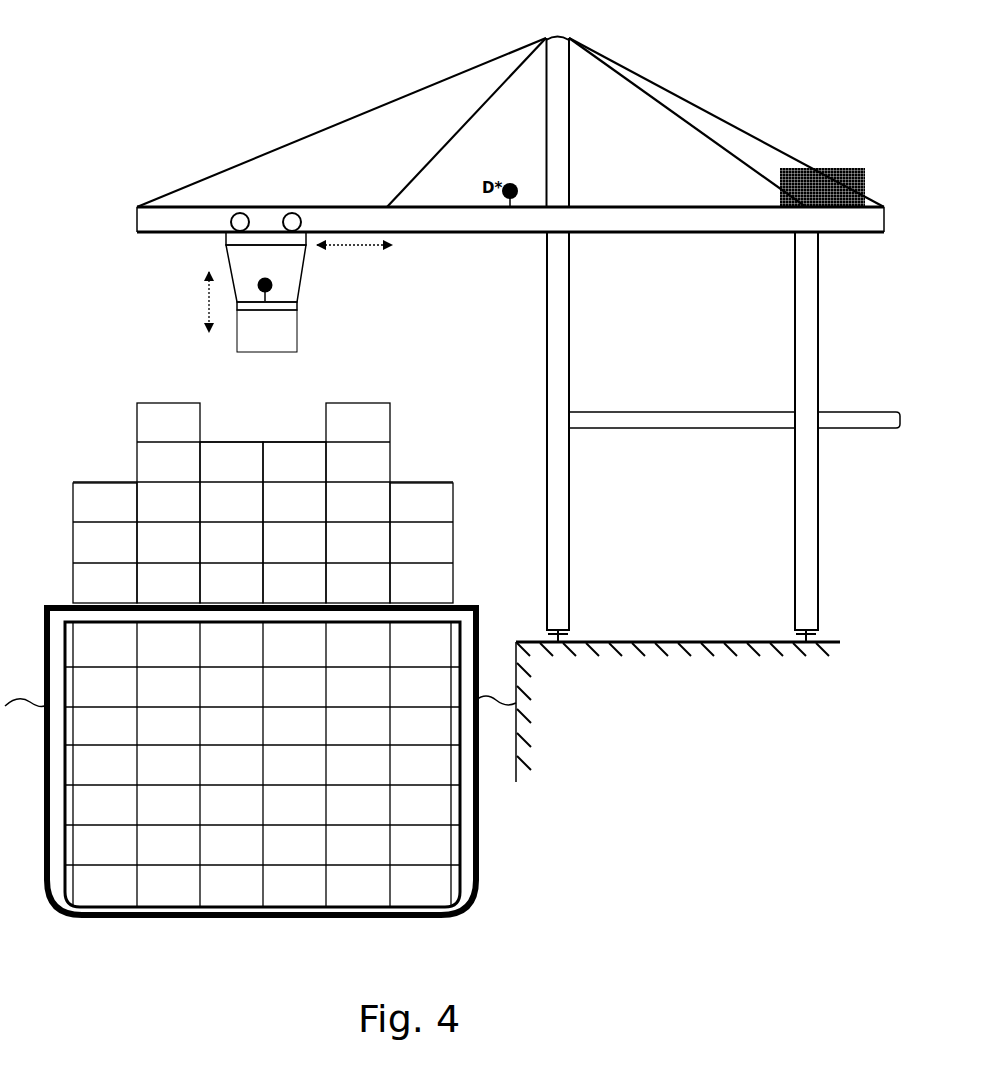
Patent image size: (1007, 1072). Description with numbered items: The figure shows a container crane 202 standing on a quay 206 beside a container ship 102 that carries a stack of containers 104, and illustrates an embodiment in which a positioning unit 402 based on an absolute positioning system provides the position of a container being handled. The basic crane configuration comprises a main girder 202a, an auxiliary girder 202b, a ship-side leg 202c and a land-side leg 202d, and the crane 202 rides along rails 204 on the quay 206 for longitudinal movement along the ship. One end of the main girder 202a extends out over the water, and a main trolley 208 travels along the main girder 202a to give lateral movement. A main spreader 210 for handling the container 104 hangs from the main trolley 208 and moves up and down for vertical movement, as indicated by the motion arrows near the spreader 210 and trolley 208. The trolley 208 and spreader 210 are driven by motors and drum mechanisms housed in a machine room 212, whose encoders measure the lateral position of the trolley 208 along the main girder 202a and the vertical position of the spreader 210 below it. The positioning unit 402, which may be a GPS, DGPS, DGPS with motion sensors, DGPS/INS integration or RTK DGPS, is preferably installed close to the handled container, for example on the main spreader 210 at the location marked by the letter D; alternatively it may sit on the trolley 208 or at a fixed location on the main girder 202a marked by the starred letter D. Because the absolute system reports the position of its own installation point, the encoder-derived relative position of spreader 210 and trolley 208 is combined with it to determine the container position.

The container ship 102 is at (478, 860).
The container 104 is at (297, 325).
The container crane 202 is at (565, 36).
The main girder 202a is at (157, 217).
The auxiliary girder 202b is at (655, 418).
The ship-side leg 202c is at (556, 540).
The land-side leg 202d is at (810, 540).
The rails 204 is at (560, 634).
The quay 206 is at (675, 648).
The main trolley 208 is at (265, 243).
The main spreader 210 is at (300, 298).
The machine room 212 is at (822, 168).
The positioning unit 402 is at (258, 280).